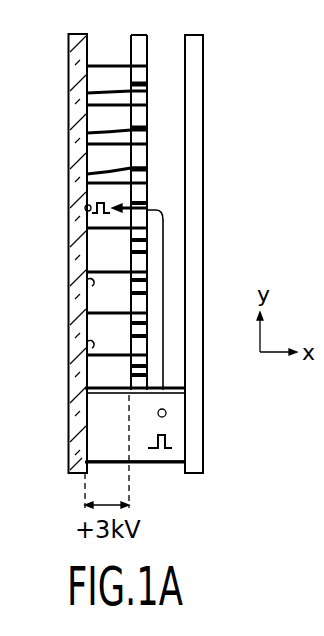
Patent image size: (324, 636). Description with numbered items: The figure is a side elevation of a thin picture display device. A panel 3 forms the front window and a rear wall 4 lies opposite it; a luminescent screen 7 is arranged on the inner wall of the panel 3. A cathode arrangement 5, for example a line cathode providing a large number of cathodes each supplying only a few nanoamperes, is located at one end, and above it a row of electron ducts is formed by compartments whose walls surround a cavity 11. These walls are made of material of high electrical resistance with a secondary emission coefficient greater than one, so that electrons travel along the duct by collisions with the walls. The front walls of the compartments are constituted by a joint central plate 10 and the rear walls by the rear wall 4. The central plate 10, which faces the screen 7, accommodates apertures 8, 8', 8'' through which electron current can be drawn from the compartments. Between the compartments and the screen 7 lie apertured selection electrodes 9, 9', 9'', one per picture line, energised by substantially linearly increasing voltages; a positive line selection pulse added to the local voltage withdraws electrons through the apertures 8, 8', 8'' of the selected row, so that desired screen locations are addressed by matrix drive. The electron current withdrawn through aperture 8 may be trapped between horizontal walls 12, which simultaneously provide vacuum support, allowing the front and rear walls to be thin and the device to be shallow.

The panel 3 is at (68, 52).
The rear wall 4 is at (195, 256).
The cathode arrangement 5 is at (166, 413).
The luminescent screen 7 is at (85, 207).
The aperture 8 is at (187, 84).
The aperture 8' is at (191, 127).
The aperture 8'' is at (194, 167).
The selection electrode 9 is at (90, 89).
The selection electrode 9' is at (90, 129).
The selection electrode 9'' is at (90, 167).
The central plate 10 is at (140, 62).
The cavity 11 is at (170, 202).
The horizontal walls 12 is at (90, 345).